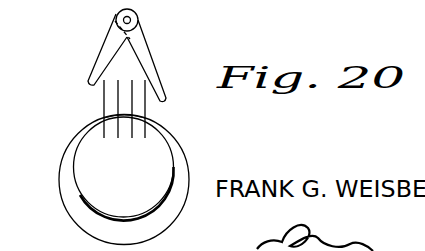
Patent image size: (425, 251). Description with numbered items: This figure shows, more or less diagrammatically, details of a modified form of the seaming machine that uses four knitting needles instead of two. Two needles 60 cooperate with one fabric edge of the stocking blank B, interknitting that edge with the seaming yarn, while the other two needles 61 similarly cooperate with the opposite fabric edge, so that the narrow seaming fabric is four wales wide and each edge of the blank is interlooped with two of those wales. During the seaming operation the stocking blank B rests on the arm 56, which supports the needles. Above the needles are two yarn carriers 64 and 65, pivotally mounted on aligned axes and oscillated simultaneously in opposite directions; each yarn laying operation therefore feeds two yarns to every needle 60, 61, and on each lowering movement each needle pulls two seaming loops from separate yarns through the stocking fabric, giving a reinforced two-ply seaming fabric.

The yarn carrier 64 is at (104, 43).
The yarn carrier 65 is at (147, 43).
The needles 60 is at (106, 107).
The needles 61 is at (147, 107).
The arm 56 is at (173, 158).
The stocking blank B is at (68, 212).